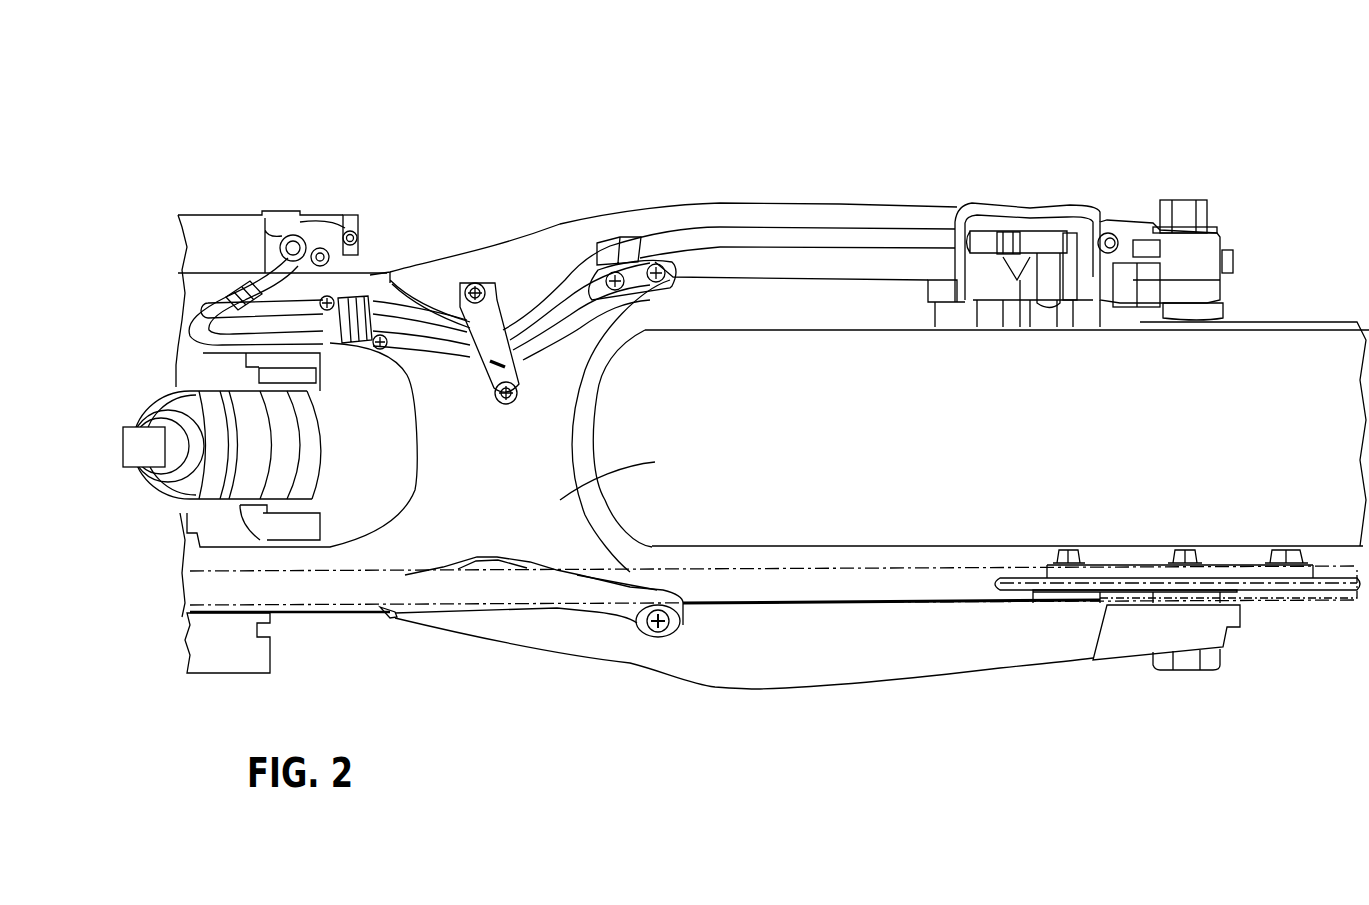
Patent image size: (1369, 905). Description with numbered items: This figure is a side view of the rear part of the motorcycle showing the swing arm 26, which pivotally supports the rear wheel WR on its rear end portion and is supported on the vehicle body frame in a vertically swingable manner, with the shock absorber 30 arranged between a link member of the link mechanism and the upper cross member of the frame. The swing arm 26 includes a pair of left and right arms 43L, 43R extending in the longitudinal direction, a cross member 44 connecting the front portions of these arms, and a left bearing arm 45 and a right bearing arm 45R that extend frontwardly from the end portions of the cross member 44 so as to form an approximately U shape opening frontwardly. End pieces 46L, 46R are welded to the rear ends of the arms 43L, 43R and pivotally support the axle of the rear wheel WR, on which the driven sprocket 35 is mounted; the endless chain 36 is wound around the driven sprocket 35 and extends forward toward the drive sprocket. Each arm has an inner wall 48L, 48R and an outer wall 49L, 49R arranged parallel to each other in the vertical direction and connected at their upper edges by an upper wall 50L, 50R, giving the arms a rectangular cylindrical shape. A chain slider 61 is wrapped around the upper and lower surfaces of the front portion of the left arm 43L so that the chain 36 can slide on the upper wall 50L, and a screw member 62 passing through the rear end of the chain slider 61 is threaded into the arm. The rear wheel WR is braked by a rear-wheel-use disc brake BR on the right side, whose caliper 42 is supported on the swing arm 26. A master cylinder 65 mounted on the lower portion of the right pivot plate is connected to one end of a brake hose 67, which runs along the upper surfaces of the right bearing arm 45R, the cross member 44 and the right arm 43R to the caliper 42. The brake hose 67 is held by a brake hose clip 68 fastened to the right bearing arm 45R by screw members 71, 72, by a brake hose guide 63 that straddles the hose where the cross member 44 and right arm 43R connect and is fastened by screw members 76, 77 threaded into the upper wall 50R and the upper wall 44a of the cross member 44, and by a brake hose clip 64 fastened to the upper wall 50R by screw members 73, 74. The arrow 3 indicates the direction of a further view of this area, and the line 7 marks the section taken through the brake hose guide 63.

The swing arm 26 is at (869, 448).
The shock absorber 30 is at (313, 440).
The driven sprocket 35 is at (1113, 585).
The endless chain 36 is at (863, 567).
The caliper 42 is at (1020, 282).
The right arm 43R is at (663, 217).
The left arm 43L is at (744, 705).
The cross member 44 is at (603, 420).
The upper wall of the cross member 44a is at (632, 476).
The bearing arm 45 is at (297, 560).
The right bearing arm 45R is at (250, 270).
The right end piece 46R is at (1130, 237).
The left end piece 46L is at (1126, 660).
The inner wall of the right arm 48R is at (740, 278).
The inner wall of the left arm 48L is at (800, 604).
The outer wall of the right arm 49R is at (587, 222).
The outer wall of the left arm 49L is at (767, 686).
The upper wall of the right arm 50R is at (713, 208).
The upper wall of the left arm 50L is at (878, 664).
The chain slider 61 is at (493, 587).
The screw member 62 is at (655, 640).
The brake hose guide 63 is at (488, 355).
The brake hose clip 64 is at (627, 238).
The master cylinder 65 is at (297, 225).
The brake hose 67 is at (777, 230).
The brake hose clip 68 is at (350, 305).
The screw member 71 is at (227, 327).
The screw member 72 is at (378, 350).
The screw member 73 is at (570, 310).
The screw member 74 is at (672, 286).
The screw member 76 is at (490, 283).
The screw member 77 is at (497, 403).
The rear-wheel-use disc brake BR is at (1110, 212).
The rear wheel WR is at (1273, 342).
The view arrow 3 is at (760, 160).
The section line 7 is at (463, 239).